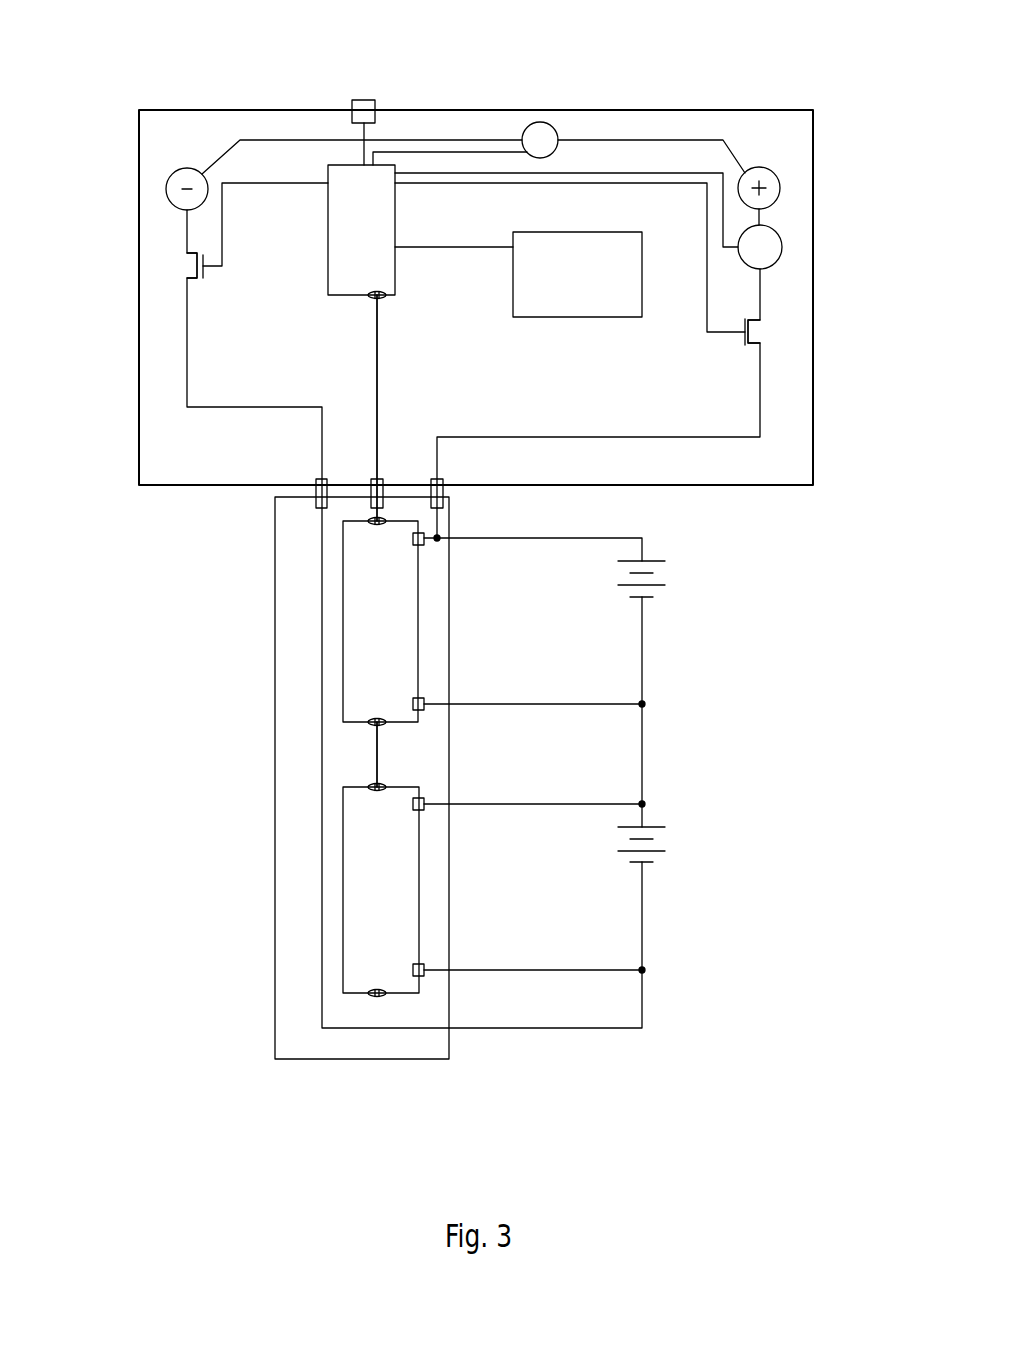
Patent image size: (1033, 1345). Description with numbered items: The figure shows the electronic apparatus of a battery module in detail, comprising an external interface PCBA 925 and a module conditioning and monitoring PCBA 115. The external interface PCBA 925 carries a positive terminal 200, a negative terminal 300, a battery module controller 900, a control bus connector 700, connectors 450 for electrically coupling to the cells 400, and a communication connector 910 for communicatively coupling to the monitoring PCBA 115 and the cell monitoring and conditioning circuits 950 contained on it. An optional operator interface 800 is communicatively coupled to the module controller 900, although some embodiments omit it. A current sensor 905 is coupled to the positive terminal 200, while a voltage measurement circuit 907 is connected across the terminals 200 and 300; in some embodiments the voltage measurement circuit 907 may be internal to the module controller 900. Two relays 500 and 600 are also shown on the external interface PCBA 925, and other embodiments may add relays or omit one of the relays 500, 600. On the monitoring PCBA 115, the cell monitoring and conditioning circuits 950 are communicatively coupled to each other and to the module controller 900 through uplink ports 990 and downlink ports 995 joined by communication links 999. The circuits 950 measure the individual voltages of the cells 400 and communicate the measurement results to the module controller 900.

The module conditioning and monitoring PCBA 115 is at (425, 1062).
The positive terminal 200 is at (766, 167).
The negative terminal 300 is at (179, 168).
The cells 400 is at (684, 590).
The connectors 450 is at (317, 482).
The relay 500 is at (757, 330).
The relay 600 is at (175, 265).
The control bus connector 700 is at (363, 100).
The operator interface 800 is at (603, 320).
The battery module controller 900 is at (352, 183).
The current sensor 905 is at (782, 238).
The voltage measurement circuit 907 is at (546, 122).
The communication connector 910 is at (376, 480).
The external interface PCBA 925 is at (697, 110).
The cell monitoring and conditioning circuits 950 is at (343, 943).
The uplink ports 990 is at (372, 522).
The downlink ports 995 is at (372, 297).
The communication links 999 is at (377, 353).